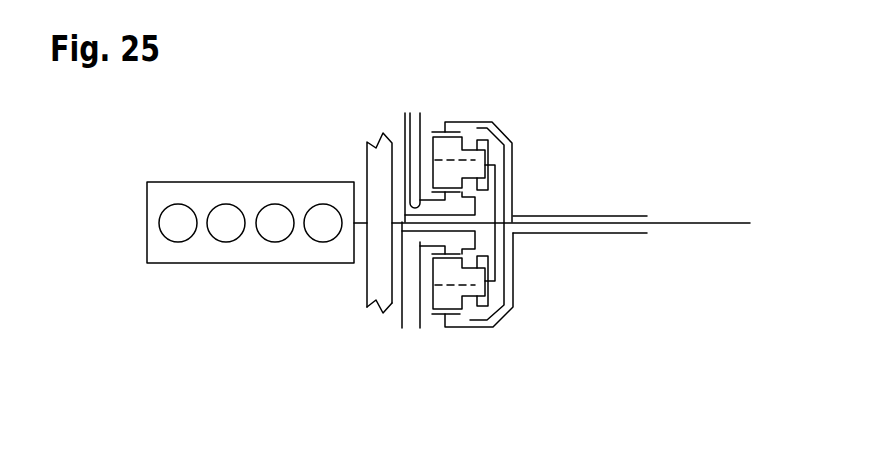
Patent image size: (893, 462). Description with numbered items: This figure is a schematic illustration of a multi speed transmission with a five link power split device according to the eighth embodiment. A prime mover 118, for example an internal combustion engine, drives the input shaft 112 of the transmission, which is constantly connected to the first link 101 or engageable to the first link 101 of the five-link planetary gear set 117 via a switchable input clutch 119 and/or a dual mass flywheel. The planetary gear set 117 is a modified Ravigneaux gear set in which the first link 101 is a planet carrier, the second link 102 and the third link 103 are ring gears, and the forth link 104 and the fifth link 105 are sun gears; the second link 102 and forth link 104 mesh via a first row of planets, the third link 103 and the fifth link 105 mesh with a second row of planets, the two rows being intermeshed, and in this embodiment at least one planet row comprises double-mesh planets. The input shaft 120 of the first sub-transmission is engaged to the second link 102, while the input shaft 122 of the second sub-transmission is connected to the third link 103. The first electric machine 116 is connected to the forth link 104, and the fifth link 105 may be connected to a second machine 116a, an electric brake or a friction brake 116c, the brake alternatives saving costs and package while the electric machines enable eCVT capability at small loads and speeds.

The first link 101 is at (500, 173).
The second link 102 is at (497, 132).
The third link 103 is at (458, 328).
The forth link 104 is at (478, 208).
The fifth link 105 is at (413, 118).
The input shaft 112 is at (363, 220).
The first electric machine 116 is at (399, 120).
The second machine 116a is at (423, 118).
The friction brake 116c is at (458, 284).
The five-link planetary gear set 117 is at (467, 289).
The prime mover 118 is at (147, 190).
The switchable input clutch 119 is at (375, 290).
The input shaft of the first sub-transmission 120 is at (700, 223).
The input shaft of the second sub-transmission 122 is at (622, 236).